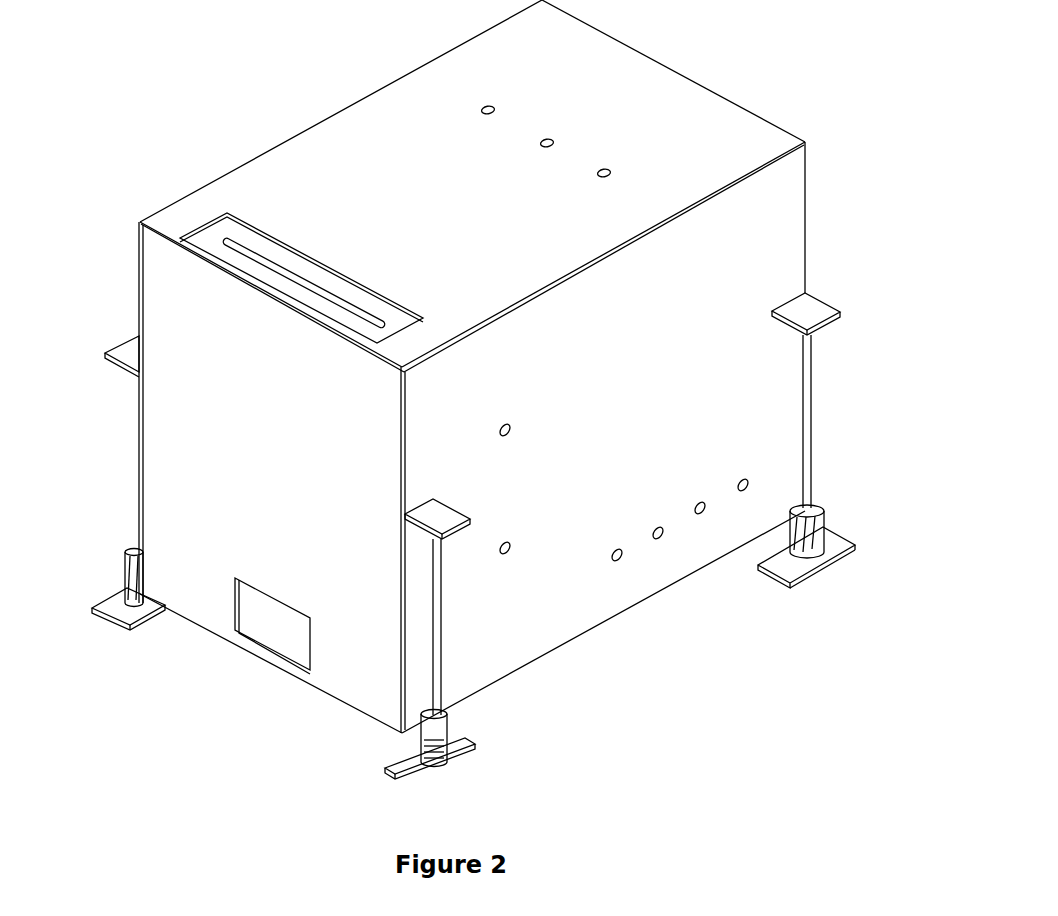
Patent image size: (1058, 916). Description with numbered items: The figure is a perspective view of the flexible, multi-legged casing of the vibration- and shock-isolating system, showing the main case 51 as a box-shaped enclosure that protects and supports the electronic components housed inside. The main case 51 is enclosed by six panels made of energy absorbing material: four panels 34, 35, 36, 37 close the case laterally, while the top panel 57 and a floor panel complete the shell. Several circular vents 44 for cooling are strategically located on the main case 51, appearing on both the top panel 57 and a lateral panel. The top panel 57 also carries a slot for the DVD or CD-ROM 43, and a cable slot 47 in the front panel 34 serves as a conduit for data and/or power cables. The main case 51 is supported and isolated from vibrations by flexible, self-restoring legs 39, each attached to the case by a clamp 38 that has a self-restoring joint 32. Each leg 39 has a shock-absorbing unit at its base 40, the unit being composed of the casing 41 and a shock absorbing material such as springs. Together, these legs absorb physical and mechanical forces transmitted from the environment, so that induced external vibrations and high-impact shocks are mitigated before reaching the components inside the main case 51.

The self-restoring joint 32 is at (830, 335).
The front panel 34 is at (263, 443).
The lateral panel 35 is at (620, 362).
The lateral panel 36 is at (703, 80).
The lateral panel 37 is at (317, 143).
The clamp 38 is at (470, 512).
The self-restoring leg 39 is at (453, 653).
The base 40 is at (470, 747).
The casing 41 is at (860, 543).
The DVD or CD-ROM 43 is at (247, 235).
The circular vents 44 is at (503, 107).
The cable slot 47 is at (270, 643).
The main case 51 is at (463, 48).
The top panel 57 is at (437, 238).